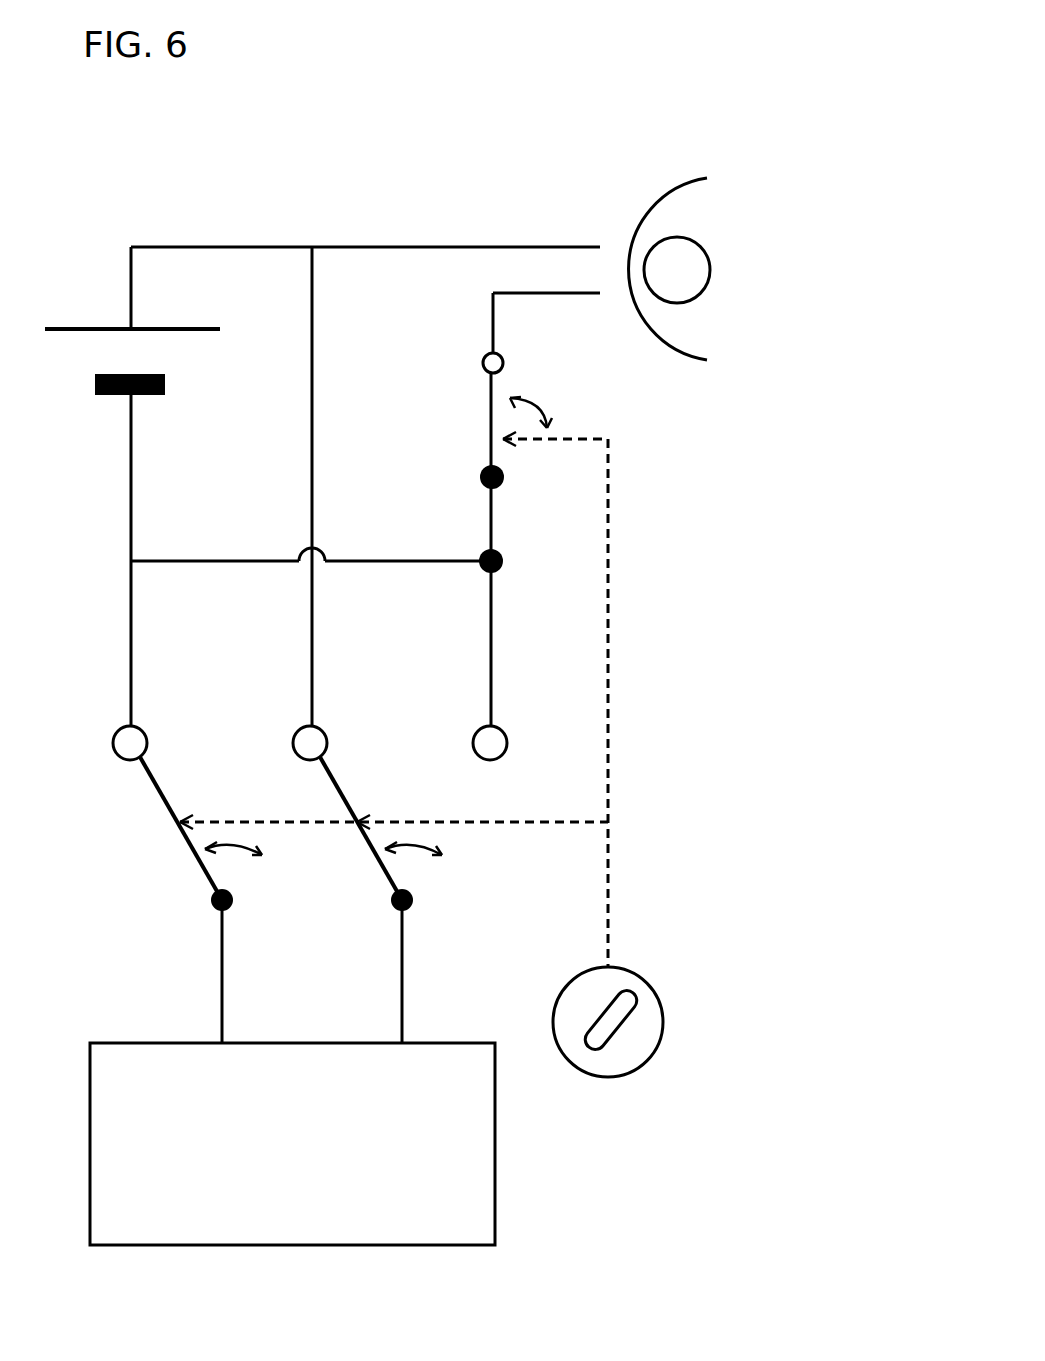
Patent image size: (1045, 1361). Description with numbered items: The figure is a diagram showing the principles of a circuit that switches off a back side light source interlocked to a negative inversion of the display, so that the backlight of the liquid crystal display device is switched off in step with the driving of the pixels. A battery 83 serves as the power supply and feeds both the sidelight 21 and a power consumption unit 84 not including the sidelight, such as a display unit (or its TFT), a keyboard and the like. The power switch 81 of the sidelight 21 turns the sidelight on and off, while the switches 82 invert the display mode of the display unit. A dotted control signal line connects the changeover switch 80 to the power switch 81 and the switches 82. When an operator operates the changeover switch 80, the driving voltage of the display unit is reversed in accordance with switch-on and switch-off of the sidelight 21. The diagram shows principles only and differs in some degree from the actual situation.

The sidelight 21 is at (632, 207).
The changeover switch 80 is at (648, 982).
The power switch 81 is at (495, 396).
The switches for inverting a display mode 82 is at (163, 790).
The battery 83 is at (105, 396).
The power consumption unit 84 is at (123, 1043).